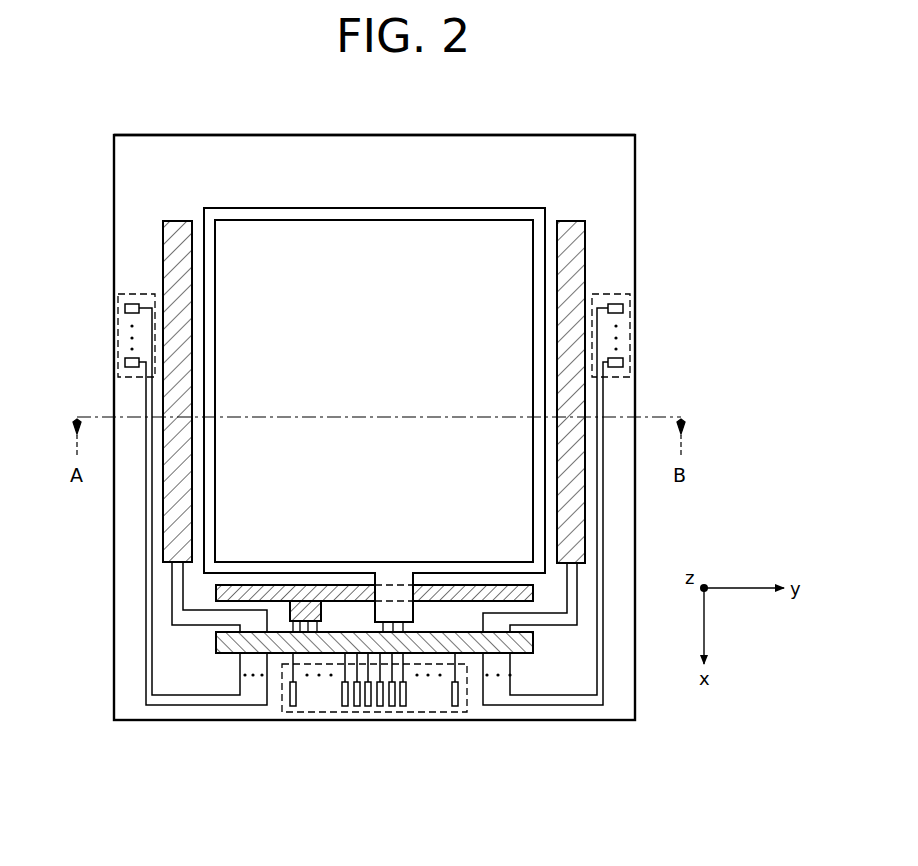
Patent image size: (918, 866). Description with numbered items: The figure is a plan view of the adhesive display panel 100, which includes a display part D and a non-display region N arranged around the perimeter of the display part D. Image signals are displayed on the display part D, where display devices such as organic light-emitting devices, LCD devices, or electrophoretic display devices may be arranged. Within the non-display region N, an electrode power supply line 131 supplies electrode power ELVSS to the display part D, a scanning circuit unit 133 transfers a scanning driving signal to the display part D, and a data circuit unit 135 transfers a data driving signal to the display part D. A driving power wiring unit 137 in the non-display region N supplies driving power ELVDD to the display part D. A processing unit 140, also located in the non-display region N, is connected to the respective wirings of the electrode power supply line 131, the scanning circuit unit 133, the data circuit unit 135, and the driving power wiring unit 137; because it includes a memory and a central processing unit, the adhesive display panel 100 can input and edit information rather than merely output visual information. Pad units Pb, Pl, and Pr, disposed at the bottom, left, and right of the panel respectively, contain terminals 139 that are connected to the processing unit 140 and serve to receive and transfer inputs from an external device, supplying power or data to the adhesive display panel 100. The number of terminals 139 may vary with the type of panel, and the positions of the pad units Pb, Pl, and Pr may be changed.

The adhesive display panel 100 is at (686, 102).
The non-display region N is at (140, 220).
The display part D is at (385, 364).
The electrode power supply line 131 is at (545, 255).
The scanning circuit unit 133 is at (165, 262).
The data circuit unit 135 is at (582, 270).
The driving power wiring unit 137 is at (216, 590).
The terminals 139 is at (293, 706).
The processing unit 140 is at (216, 640).
The left pad unit Pl is at (118, 324).
The right pad unit Pr is at (631, 327).
The bottom pad unit Pb is at (385, 712).